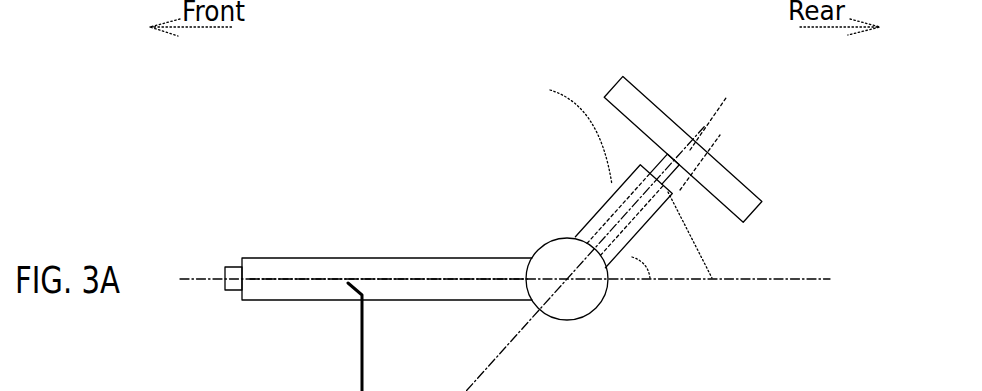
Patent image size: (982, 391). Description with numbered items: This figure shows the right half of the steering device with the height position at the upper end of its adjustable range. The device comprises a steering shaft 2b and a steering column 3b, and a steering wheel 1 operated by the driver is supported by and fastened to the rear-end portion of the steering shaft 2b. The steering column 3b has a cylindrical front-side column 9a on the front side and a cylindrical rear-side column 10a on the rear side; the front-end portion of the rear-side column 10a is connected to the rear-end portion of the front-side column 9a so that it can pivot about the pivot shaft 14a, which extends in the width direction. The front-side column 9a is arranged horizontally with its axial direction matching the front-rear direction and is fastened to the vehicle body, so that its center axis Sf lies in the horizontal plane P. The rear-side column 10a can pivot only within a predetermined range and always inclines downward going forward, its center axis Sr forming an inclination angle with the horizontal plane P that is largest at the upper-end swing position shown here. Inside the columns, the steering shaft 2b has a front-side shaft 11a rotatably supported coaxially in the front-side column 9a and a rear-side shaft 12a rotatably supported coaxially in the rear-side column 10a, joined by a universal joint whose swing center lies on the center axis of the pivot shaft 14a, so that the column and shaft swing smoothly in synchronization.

The steering wheel 1 is at (690, 140).
The steering shaft 2b is at (730, 160).
The steering column 3b is at (465, 262).
The front-side column 9a is at (343, 264).
The rear-side column 10a is at (600, 213).
The front-side shaft 11a is at (234, 267).
The rear-side shaft 12a is at (645, 140).
The pivot shaft 14a is at (571, 322).
The horizontal plane P is at (808, 279).
The center axis of the front-side column Sf is at (320, 280).
The center axis of the rear-side column Sr is at (569, 131).